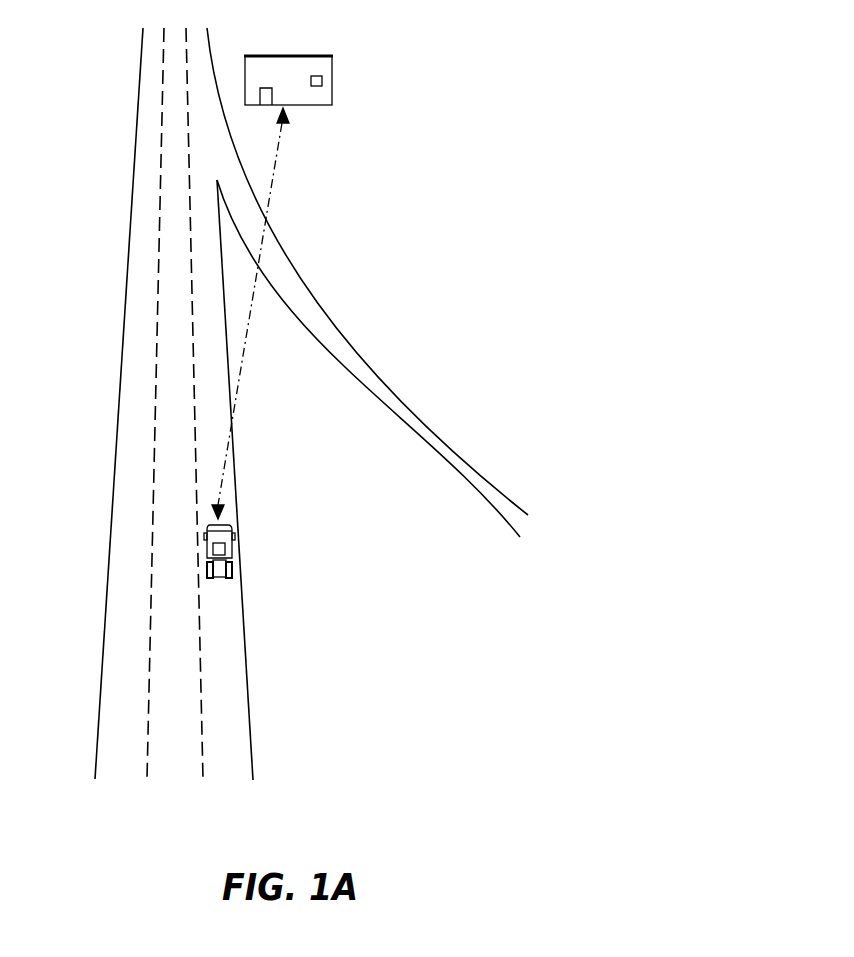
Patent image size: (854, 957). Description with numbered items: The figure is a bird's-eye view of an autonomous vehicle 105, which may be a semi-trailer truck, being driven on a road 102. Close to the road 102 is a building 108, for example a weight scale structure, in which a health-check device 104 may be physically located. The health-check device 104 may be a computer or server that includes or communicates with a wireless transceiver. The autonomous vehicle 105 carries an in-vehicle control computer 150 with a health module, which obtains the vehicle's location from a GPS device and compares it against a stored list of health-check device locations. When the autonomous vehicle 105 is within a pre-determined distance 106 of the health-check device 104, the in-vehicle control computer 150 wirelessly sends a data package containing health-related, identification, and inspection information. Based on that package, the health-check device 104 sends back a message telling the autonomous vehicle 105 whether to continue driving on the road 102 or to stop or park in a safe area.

The road 102 is at (135, 450).
The health-check device 104 is at (320, 78).
The autonomous vehicle 105 is at (222, 527).
The pre-determined distance 106 is at (265, 177).
The building 108 is at (288, 65).
The in-vehicle control computer 150 is at (222, 548).